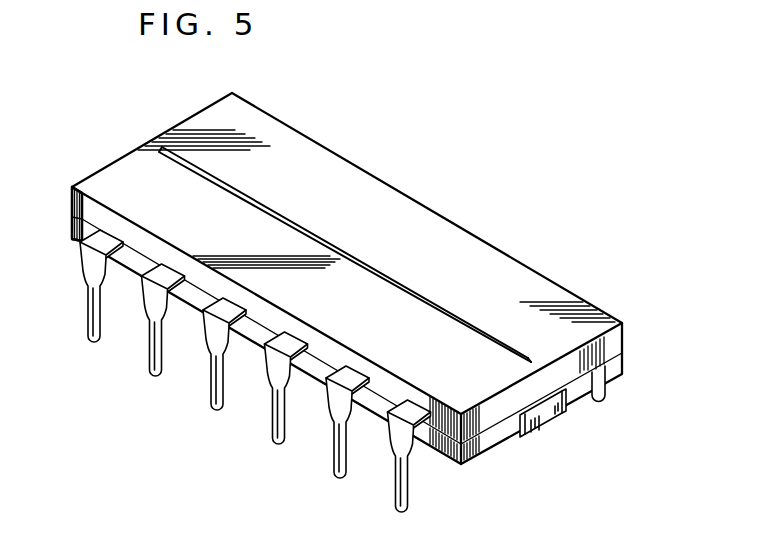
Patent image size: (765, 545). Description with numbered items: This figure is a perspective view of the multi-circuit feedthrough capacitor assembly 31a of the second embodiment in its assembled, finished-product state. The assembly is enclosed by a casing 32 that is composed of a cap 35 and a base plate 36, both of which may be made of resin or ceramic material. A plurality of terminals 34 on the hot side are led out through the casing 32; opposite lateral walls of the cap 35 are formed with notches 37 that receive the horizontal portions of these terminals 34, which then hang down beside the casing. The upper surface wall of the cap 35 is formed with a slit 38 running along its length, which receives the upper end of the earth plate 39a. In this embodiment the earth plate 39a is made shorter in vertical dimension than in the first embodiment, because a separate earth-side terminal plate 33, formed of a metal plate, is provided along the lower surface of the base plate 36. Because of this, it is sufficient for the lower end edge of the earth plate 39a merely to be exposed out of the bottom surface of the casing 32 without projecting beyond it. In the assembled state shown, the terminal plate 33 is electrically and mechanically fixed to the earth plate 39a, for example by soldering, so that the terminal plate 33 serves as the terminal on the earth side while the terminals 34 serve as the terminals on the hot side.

The multi-circuit feedthrough capacitor assembly 31a is at (342, 303).
The casing 32 is at (431, 211).
The terminal plate 33 is at (551, 416).
The terminals 34 is at (412, 506).
The cap 35 is at (88, 185).
The base plate 36 is at (79, 238).
The notches 37 is at (170, 270).
The slit 38 is at (230, 183).
The earth plate 39a is at (500, 345).